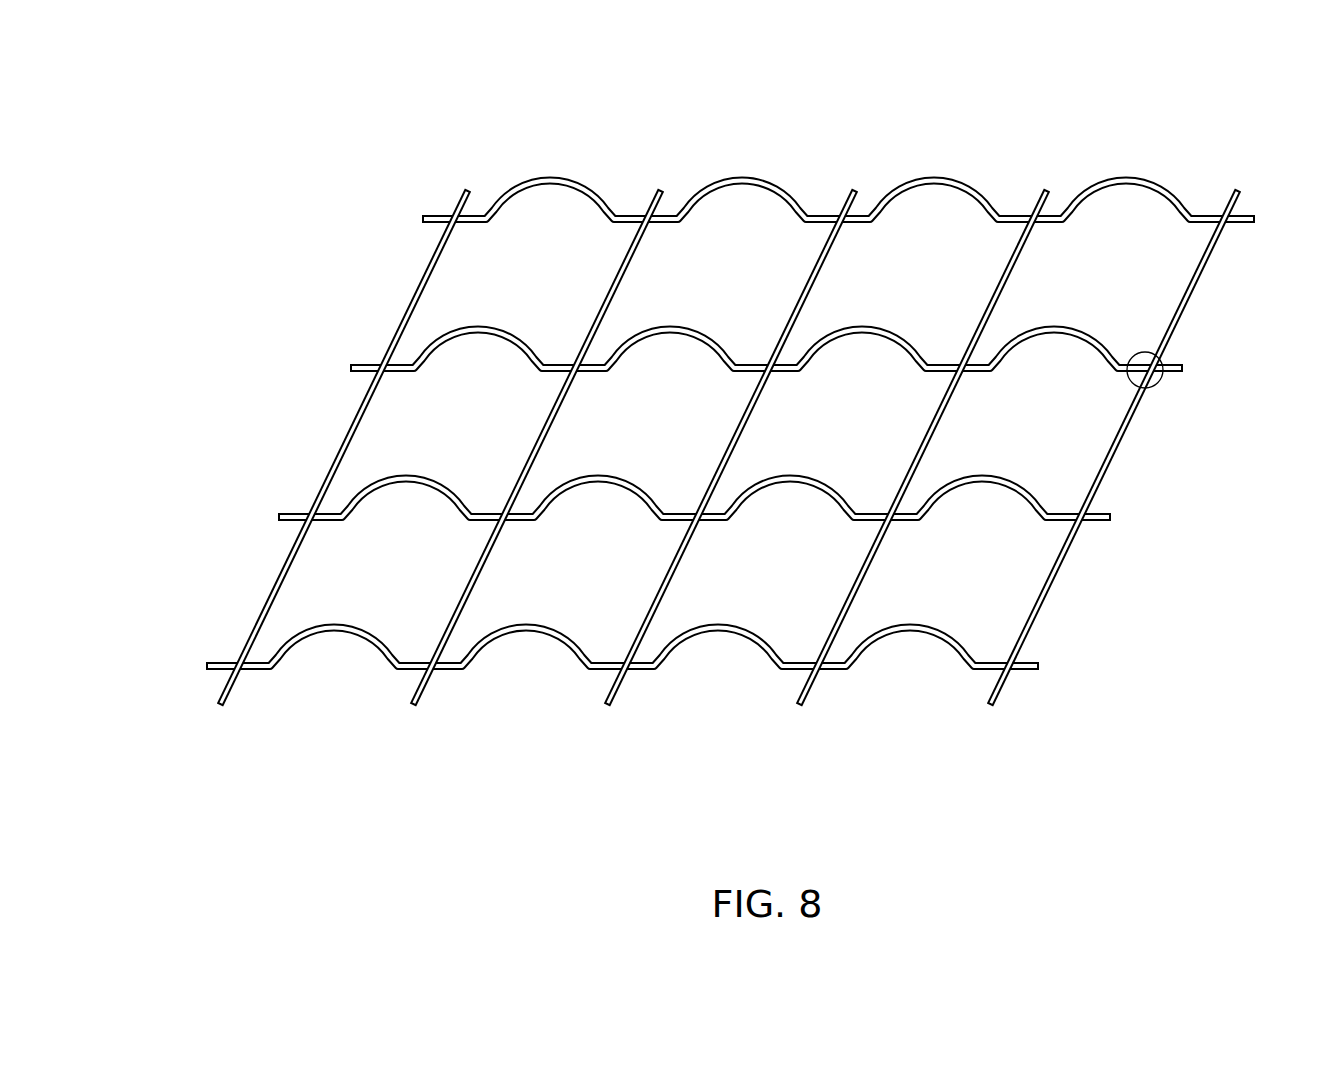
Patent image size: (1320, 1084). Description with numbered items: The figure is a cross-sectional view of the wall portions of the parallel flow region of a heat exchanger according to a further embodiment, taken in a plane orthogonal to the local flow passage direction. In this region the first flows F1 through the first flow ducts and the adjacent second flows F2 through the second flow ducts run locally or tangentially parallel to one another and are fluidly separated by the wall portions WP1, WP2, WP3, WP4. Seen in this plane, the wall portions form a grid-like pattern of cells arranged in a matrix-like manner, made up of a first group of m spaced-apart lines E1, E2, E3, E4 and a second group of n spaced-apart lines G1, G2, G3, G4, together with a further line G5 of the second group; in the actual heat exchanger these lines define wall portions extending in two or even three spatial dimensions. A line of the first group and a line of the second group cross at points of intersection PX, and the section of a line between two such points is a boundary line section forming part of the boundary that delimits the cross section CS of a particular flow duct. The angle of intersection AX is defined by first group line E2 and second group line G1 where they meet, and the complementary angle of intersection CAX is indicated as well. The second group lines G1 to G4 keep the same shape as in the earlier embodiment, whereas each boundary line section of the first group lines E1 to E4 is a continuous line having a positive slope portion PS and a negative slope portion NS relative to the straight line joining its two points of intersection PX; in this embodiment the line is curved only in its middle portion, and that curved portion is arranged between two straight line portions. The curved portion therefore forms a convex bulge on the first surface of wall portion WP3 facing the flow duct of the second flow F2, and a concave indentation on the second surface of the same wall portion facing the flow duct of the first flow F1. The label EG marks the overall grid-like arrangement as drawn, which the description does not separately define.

The electrode group EG is at (245, 121).
The first group line E1 is at (1172, 182).
The first group line E2 is at (1105, 340).
The first group line E3 is at (1042, 497).
The first group line E4 is at (968, 647).
The second group line G1 is at (422, 273).
The second group line G2 is at (518, 465).
The second group line G3 is at (645, 605).
The second group line G4 is at (835, 605).
The fifth gate line G5 is at (1028, 635).
The cross section CS is at (320, 563).
The angle of intersection AX is at (1148, 359).
The complementary angle of intersection CAX is at (1152, 381).
The point of intersection PX is at (455, 214).
The positive slope portion PS is at (512, 187).
The negative slope portion NS is at (580, 182).
The wall portion WP1 is at (772, 177).
The wall portion WP2 is at (637, 263).
The wall portion WP3 is at (727, 340).
The wall portion WP4 is at (825, 265).
The first flow F1 is at (790, 579).
The second flow F2 is at (985, 579).